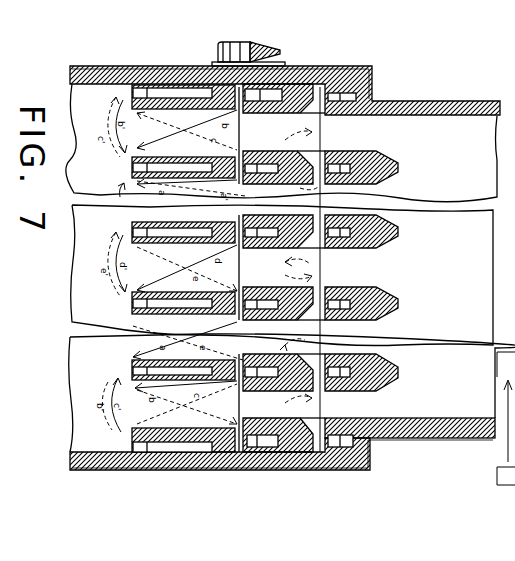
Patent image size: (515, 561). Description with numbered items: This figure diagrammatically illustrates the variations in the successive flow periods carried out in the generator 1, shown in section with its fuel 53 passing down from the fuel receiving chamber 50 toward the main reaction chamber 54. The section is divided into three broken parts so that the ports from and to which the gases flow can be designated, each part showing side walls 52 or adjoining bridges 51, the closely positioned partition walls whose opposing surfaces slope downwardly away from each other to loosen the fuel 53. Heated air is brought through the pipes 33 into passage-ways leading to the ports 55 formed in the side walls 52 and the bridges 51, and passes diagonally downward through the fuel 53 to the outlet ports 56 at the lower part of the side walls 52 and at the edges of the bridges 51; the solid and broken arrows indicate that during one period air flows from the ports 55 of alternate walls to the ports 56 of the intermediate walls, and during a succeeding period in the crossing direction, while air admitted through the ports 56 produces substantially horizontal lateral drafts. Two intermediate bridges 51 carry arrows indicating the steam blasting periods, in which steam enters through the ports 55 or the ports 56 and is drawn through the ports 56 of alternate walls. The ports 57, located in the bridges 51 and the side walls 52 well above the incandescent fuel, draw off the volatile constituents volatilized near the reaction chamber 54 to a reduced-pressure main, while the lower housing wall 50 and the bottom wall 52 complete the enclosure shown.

The generator 1 is at (120, 66).
The pipes 33 is at (281, 49).
The fuel receiving chamber 50 is at (422, 378).
The bridges 51 is at (398, 163).
The side walls 52 is at (310, 453).
The fuel 53 is at (427, 243).
The main reaction chamber 54 is at (177, 413).
The ports 55 is at (236, 269).
The outlet ports 56 is at (132, 89).
The ports 57 is at (319, 269).